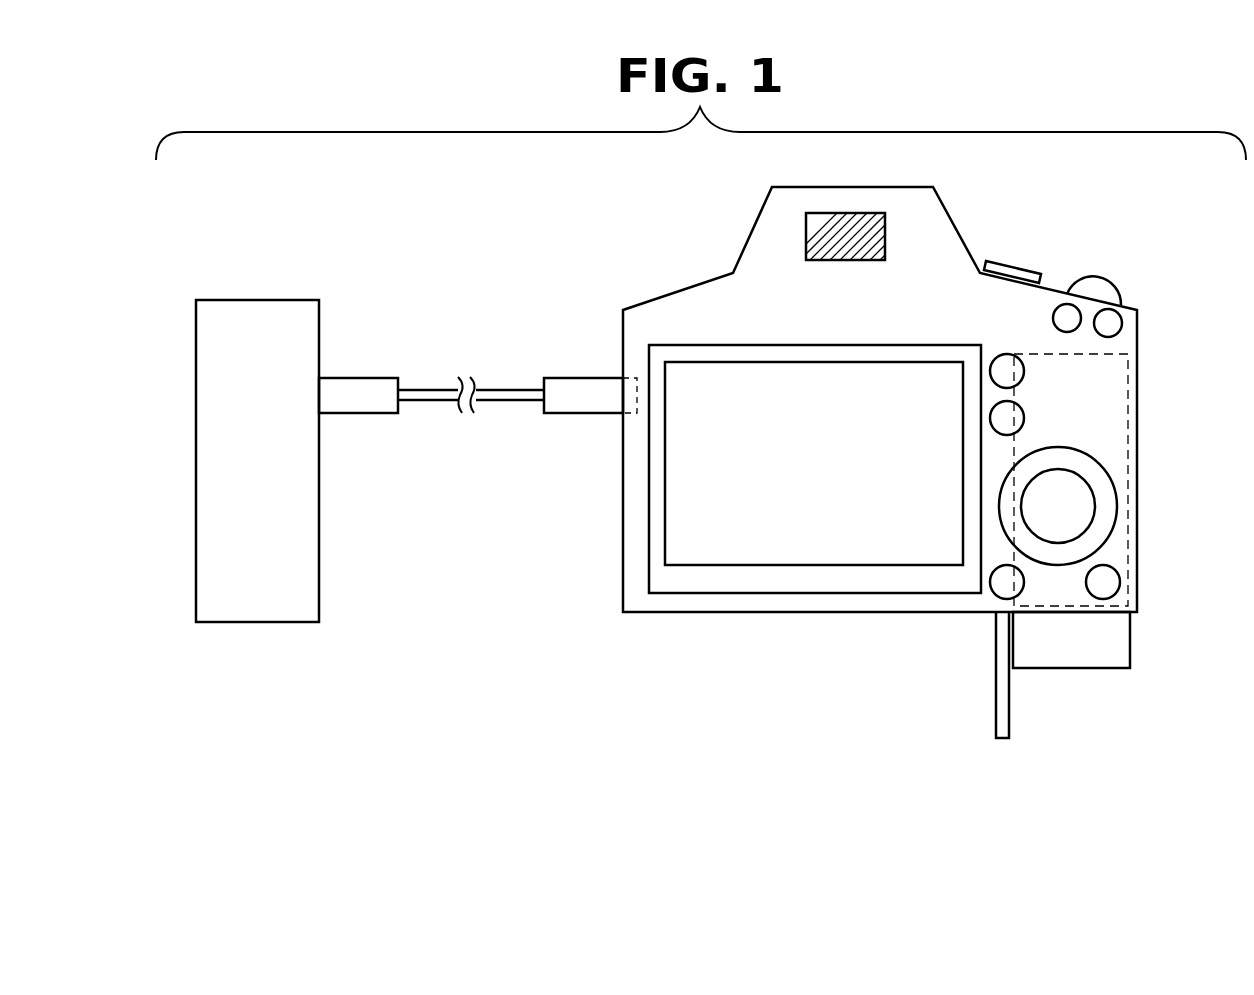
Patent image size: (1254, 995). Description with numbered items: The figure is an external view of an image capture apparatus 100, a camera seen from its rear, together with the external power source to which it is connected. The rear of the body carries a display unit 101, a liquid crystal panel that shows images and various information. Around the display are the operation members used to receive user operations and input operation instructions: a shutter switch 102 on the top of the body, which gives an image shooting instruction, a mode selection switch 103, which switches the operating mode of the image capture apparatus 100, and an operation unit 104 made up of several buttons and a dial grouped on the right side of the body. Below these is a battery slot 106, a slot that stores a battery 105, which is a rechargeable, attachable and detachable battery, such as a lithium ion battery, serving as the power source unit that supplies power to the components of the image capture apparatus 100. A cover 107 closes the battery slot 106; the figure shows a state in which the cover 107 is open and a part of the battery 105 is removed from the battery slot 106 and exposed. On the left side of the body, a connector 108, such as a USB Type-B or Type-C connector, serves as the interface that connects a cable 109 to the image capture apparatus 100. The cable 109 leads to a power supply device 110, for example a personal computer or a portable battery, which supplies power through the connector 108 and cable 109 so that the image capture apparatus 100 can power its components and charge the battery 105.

The image capture apparatus 100 is at (650, 612).
The display unit 101 is at (760, 593).
The shutter switch 102 is at (1107, 292).
The mode selection switch 103 is at (1016, 268).
The operation unit 104 is at (1024, 578).
The battery 105 is at (1094, 668).
The battery slot 106 is at (1130, 598).
The cover 107 is at (995, 724).
The connector 108 is at (628, 362).
The cable 109 is at (506, 390).
The power supply device 110 is at (284, 300).